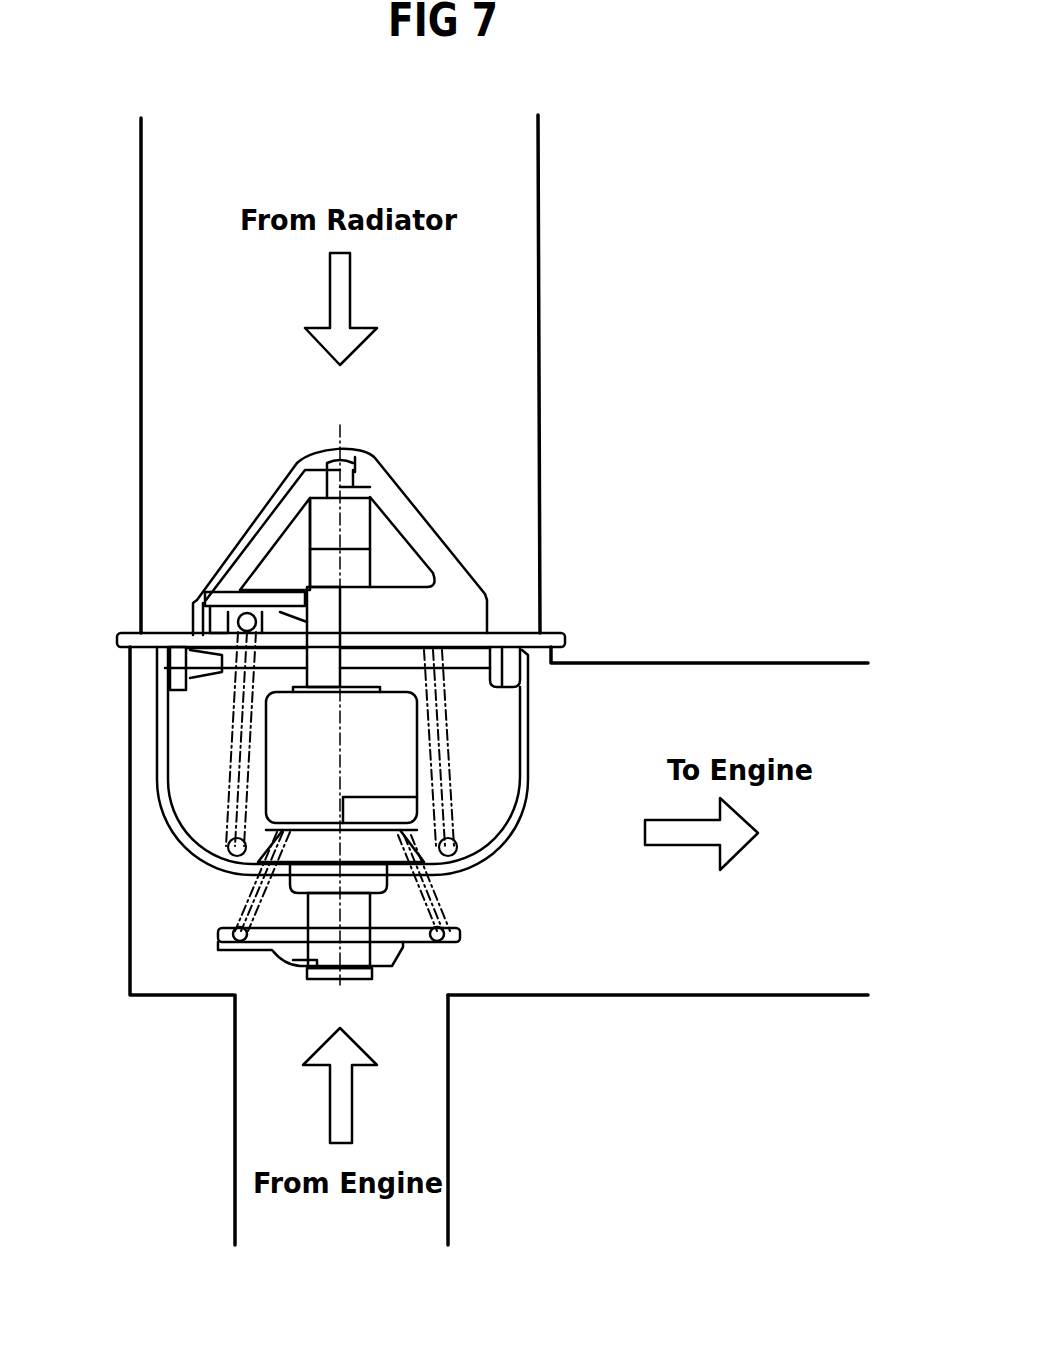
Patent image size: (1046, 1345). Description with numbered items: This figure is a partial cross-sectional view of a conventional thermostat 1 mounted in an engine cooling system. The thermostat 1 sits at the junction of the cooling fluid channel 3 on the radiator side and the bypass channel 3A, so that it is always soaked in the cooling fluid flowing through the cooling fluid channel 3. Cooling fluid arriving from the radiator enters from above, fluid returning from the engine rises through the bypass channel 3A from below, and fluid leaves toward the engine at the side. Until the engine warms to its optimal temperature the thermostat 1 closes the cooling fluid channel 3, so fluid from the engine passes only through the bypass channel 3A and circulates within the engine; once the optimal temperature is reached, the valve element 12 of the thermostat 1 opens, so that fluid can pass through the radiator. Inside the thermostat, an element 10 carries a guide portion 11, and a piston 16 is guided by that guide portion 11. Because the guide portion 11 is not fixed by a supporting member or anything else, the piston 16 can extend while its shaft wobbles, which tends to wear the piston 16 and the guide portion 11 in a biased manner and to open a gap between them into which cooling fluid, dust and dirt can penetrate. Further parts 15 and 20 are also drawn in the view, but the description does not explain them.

The thermostat 1 is at (424, 488).
The cooling fluid channel 3 is at (523, 258).
The bypass channel 3A is at (252, 1112).
The element 10 is at (323, 640).
The guide portion 11 is at (307, 533).
The valve element 12 is at (200, 604).
The wax element 15 is at (268, 742).
The piston 16 is at (330, 470).
The lower frame 20 is at (282, 950).